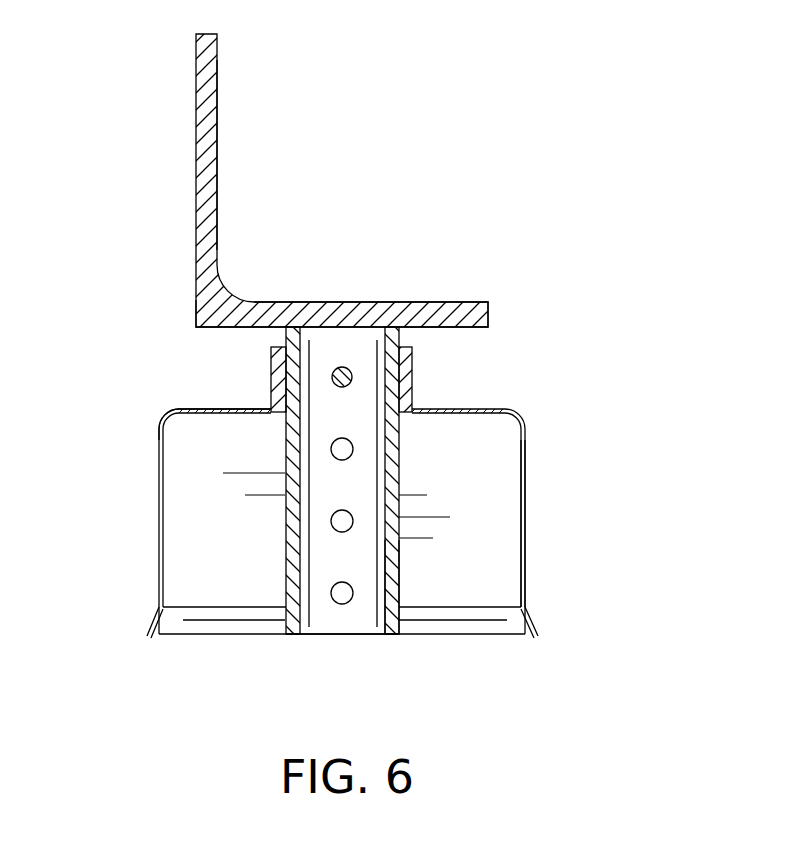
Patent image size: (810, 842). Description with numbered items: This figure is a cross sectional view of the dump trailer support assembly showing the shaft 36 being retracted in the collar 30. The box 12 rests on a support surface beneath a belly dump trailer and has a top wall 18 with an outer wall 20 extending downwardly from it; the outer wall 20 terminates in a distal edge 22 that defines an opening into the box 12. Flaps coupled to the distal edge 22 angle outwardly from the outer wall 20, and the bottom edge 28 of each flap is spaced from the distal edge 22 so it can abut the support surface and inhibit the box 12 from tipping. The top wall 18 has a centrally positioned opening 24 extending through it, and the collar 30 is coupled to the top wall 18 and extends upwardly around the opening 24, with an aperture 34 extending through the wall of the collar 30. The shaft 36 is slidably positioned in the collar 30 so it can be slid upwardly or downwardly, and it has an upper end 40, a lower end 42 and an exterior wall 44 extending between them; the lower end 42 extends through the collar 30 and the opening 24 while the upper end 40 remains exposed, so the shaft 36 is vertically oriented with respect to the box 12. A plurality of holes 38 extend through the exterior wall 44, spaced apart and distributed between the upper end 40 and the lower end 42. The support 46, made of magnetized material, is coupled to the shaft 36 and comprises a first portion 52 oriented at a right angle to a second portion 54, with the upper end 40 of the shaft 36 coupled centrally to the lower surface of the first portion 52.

The box 12 is at (522, 410).
The top wall 18 is at (195, 410).
The outer wall 20 is at (525, 518).
The distal edge 22 is at (237, 607).
The opening 24 is at (364, 366).
The bottom edge 28 is at (147, 637).
The collar 30 is at (271, 375).
The aperture 34 is at (343, 366).
The shaft 36 is at (399, 468).
The holes 38 is at (331, 593).
The upper end 40 is at (290, 327).
The lower end 42 is at (391, 634).
The exterior wall 44 is at (399, 563).
The support 46 is at (196, 208).
The first portion 52 is at (481, 252).
The second portion 54 is at (240, 140).